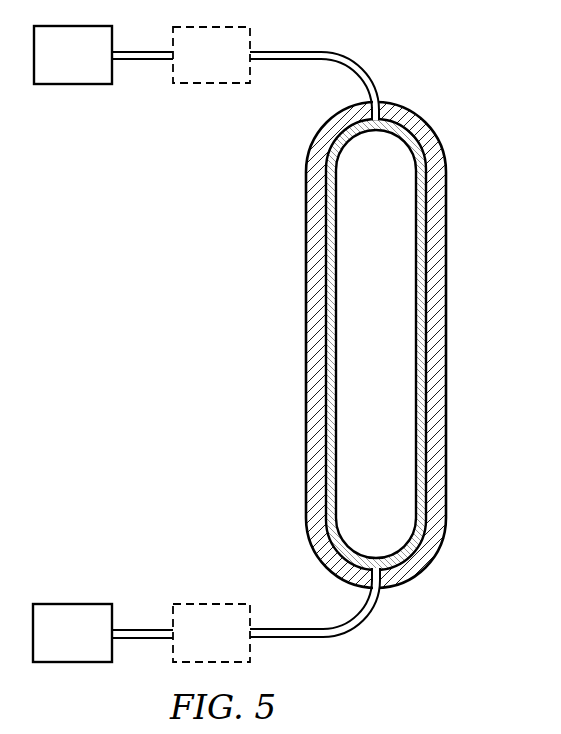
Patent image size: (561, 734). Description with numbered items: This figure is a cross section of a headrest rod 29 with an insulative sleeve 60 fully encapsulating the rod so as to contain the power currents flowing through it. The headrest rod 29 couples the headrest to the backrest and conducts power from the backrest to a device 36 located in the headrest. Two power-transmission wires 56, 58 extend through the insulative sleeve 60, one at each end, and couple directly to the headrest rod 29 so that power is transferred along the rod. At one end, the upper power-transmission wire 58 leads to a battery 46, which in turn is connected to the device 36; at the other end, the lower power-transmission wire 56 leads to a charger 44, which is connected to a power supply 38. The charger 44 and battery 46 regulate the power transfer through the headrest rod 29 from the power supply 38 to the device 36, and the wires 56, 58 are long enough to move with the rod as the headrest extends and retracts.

The headrest rod 29 is at (422, 298).
The insulative sleeve 60 is at (438, 363).
The power-transmission wire 58 is at (315, 52).
The power-transmission wire 56 is at (316, 637).
The device 36 is at (72, 84).
The power supply 38 is at (70, 604).
The battery 46 is at (212, 84).
The charger 44 is at (219, 604).